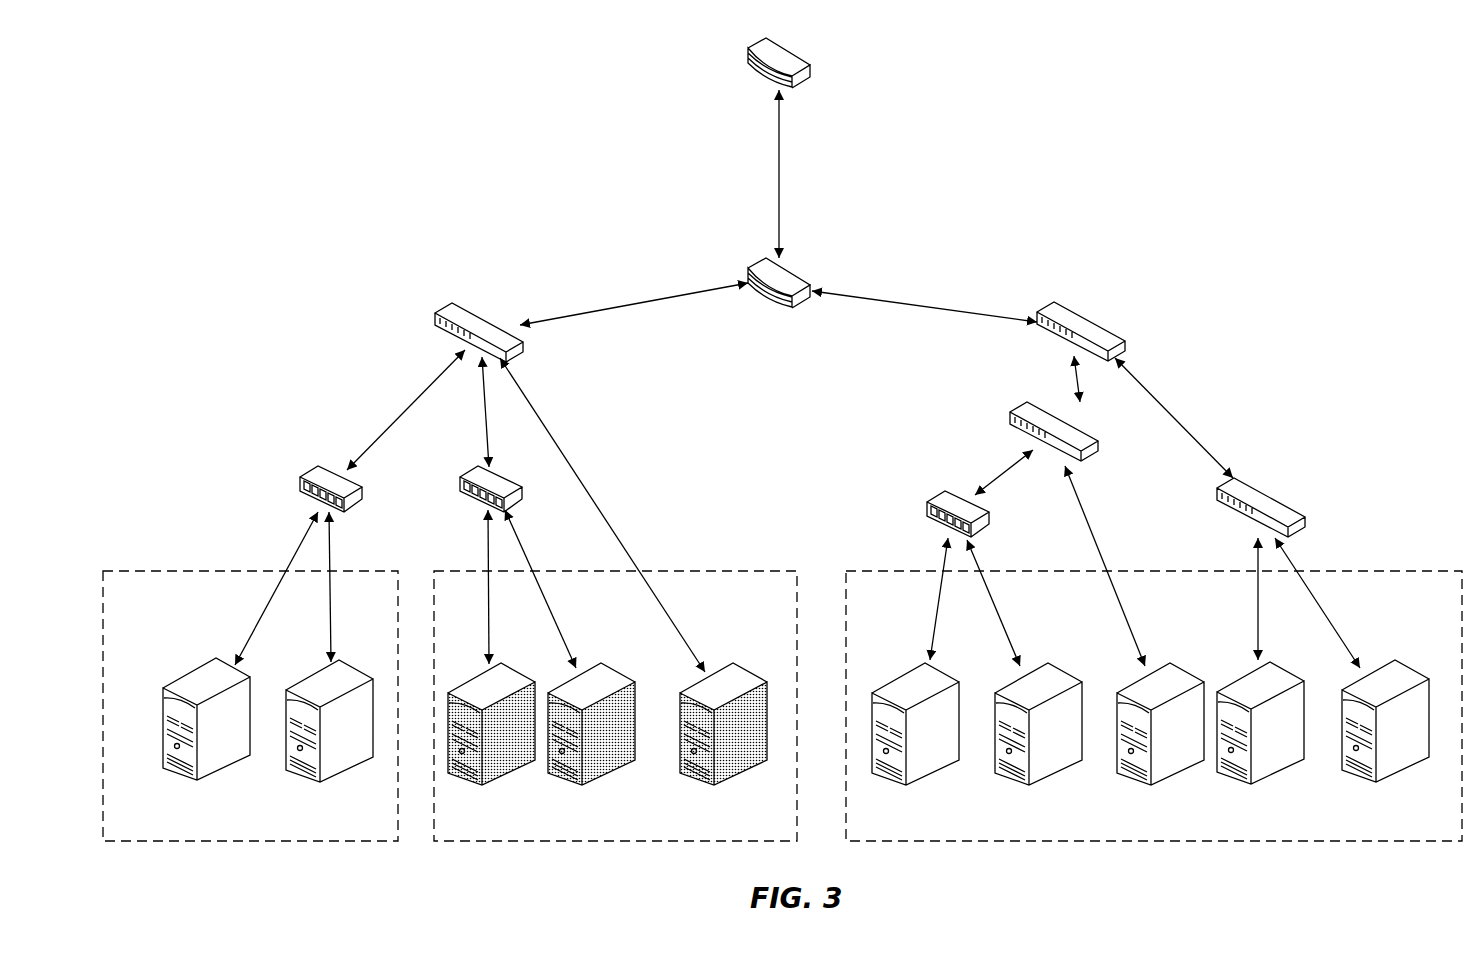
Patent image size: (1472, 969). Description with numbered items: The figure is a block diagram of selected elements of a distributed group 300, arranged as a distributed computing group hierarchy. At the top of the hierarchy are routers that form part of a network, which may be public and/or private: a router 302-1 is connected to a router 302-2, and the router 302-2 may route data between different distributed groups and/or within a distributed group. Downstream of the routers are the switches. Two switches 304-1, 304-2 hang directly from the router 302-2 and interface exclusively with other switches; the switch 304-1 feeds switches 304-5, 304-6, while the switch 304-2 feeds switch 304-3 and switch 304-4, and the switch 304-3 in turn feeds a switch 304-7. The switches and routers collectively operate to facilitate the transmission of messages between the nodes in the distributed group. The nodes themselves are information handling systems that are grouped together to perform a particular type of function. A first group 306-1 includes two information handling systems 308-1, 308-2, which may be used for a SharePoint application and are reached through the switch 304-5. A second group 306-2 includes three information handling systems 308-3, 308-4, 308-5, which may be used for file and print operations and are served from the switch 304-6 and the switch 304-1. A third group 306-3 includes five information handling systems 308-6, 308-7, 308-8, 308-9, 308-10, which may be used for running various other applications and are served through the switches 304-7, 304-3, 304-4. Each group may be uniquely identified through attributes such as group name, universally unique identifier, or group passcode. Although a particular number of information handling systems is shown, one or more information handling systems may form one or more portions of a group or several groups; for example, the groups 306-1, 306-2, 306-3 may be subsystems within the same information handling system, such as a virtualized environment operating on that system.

The distributed group 300 is at (1180, 96).
The router 302-1 is at (788, 50).
The router 302-2 is at (788, 272).
The switch 304-1 is at (467, 305).
The switch 304-2 is at (1068, 310).
The switch 304-3 is at (1021, 405).
The switch 304-4 is at (1260, 489).
The switch 304-5 is at (314, 465).
The switch 304-6 is at (472, 465).
The switch 304-7 is at (939, 492).
The group 306-1 is at (187, 570).
The group 306-2 is at (722, 570).
The group 306-3 is at (1379, 570).
The information handling system 308-1 is at (206, 783).
The information handling system 308-2 is at (303, 781).
The information handling system 308-3 is at (527, 767).
The information handling system 308-4 is at (566, 781).
The information handling system 308-5 is at (696, 781).
The information handling system 308-6 is at (886, 781).
The information handling system 308-7 is at (1011, 781).
The information handling system 308-8 is at (1131, 781).
The information handling system 308-9 is at (1231, 781).
The information handling system 308-10 is at (1353, 781).